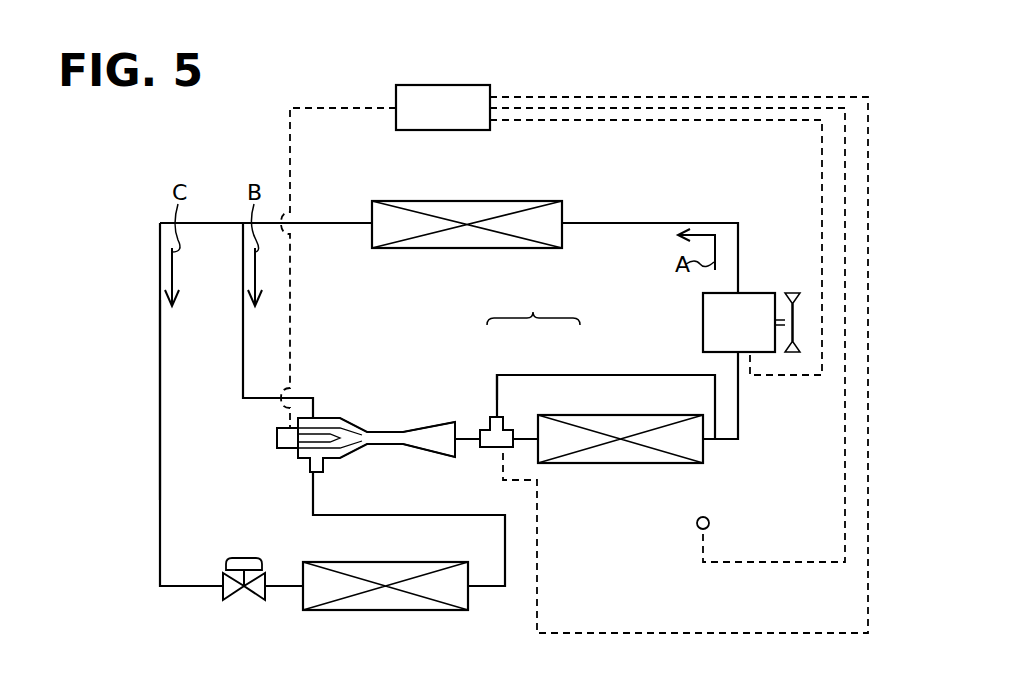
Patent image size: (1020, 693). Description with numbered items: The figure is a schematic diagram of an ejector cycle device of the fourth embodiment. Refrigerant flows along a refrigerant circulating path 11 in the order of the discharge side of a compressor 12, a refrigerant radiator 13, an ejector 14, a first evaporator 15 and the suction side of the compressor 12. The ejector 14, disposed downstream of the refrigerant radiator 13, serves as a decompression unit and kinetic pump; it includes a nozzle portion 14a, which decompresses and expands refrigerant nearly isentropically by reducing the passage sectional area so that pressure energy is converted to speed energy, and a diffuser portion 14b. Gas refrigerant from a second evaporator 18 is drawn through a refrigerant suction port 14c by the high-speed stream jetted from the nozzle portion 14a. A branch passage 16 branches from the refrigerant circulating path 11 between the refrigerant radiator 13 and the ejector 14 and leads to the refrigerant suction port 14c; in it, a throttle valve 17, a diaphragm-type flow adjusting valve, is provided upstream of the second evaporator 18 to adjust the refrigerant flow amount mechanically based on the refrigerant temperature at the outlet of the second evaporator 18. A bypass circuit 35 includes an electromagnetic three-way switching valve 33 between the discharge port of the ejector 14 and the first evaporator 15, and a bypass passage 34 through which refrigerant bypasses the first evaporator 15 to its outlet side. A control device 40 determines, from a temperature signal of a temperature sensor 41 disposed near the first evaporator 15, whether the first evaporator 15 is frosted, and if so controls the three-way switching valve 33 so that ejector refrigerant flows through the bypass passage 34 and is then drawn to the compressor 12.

The refrigerant circulating path 11 is at (243, 337).
The compressor 12 is at (752, 293).
The refrigerant radiator 13 is at (450, 201).
The ejector 14 is at (378, 438).
The nozzle portion 14a is at (340, 425).
The diffuser portion 14b is at (425, 456).
The refrigerant suction port 14c is at (322, 466).
The first evaporator 15 is at (583, 464).
The branch passage 16 is at (160, 405).
The throttle valve 17 is at (240, 600).
The second evaporator 18 is at (388, 610).
The electromagnetic three-way switching valve 33 is at (481, 428).
The bypass passage 34 is at (569, 375).
The bypass circuit 35 is at (533, 306).
The control device 40 is at (458, 85).
The temperature sensor 41 is at (709, 519).